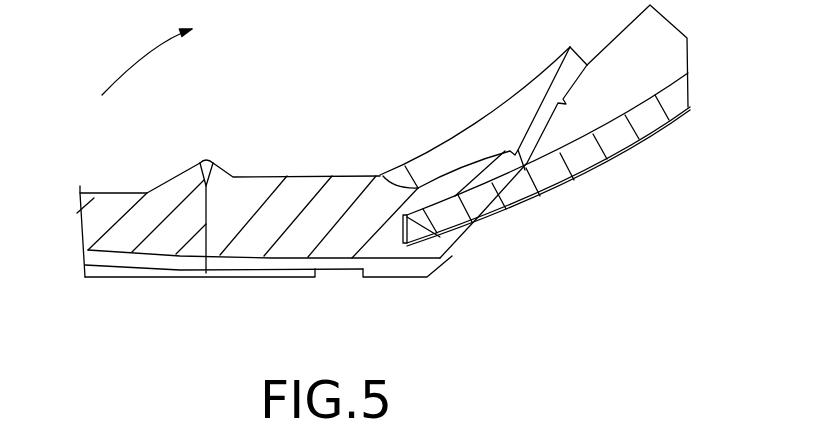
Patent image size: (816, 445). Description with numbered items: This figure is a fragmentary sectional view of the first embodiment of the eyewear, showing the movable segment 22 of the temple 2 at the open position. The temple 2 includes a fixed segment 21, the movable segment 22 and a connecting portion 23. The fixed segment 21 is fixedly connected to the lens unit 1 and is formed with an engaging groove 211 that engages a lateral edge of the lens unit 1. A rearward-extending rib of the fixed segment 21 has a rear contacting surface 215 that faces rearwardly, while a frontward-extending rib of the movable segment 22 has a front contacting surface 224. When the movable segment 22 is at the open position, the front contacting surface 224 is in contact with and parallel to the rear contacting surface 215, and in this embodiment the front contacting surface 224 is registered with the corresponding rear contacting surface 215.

The lens unit 1 is at (648, 120).
The temple 2 is at (127, 283).
The fixed segment 21 is at (482, 240).
The engaging groove 211 is at (510, 207).
The rear contacting surface 215 is at (207, 237).
The movable segment 22 is at (88, 222).
The front contacting surface 224 is at (205, 215).
The connecting portion 23 is at (207, 163).